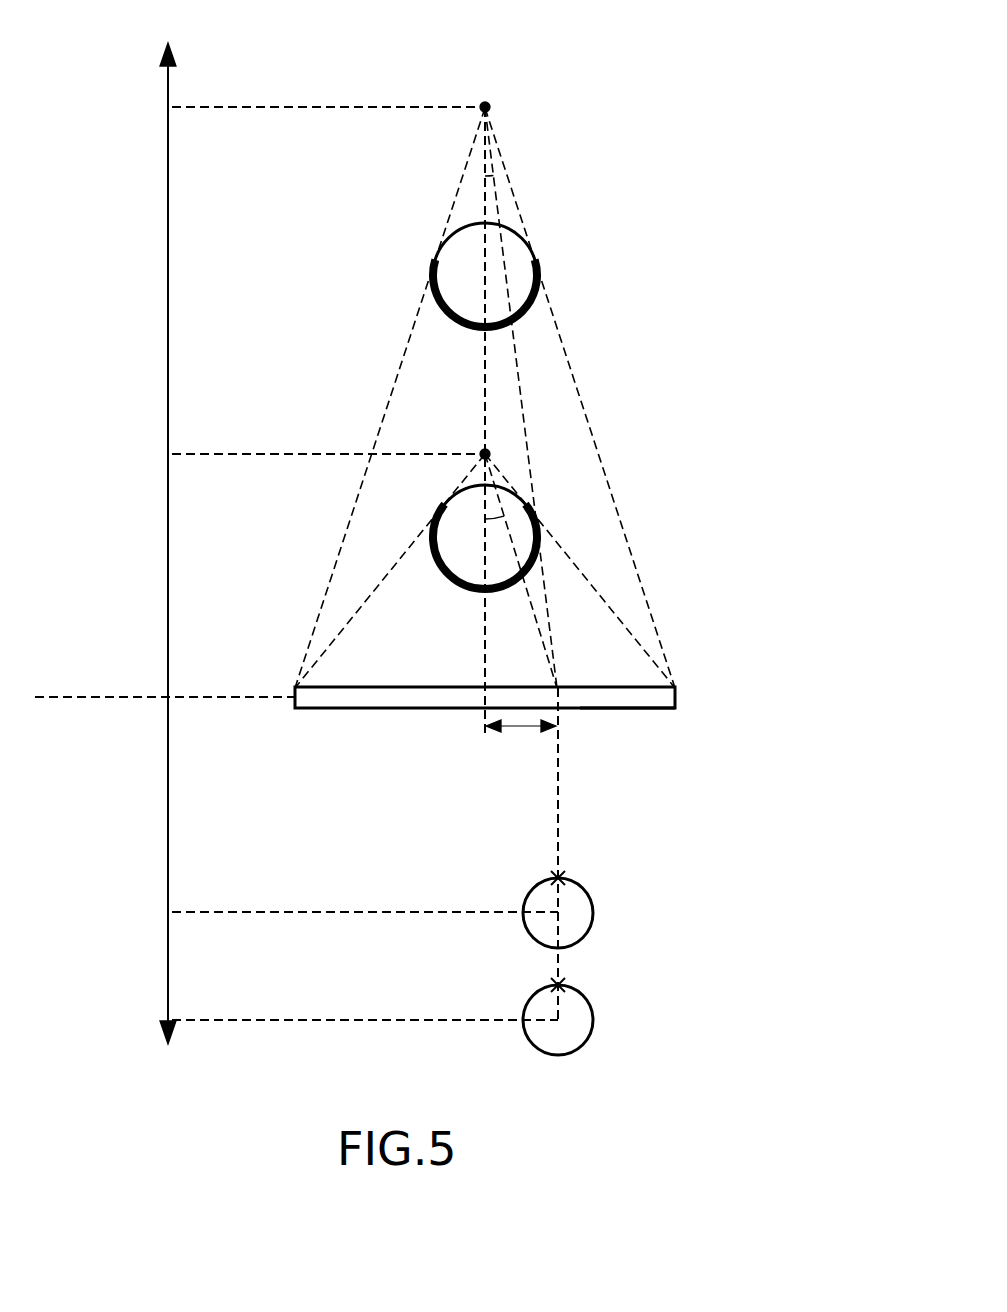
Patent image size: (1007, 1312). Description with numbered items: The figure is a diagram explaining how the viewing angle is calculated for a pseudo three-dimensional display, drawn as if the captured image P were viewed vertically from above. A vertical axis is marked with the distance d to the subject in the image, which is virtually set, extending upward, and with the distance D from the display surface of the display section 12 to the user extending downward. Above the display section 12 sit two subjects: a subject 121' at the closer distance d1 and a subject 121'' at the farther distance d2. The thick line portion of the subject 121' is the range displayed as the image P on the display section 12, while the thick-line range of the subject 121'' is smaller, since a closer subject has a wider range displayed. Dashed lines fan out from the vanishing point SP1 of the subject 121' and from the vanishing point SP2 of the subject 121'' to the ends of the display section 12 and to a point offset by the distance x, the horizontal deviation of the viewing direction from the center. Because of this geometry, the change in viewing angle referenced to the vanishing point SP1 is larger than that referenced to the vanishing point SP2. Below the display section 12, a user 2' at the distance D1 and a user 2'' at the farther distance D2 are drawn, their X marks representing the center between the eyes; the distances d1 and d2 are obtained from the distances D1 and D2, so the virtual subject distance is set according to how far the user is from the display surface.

The display section 12 is at (678, 693).
The image P is at (633, 708).
The user 2' is at (593, 909).
The user 2'' is at (596, 1016).
The subject 121' is at (411, 529).
The subject 121'' is at (537, 269).
The vanishing point SP1 is at (490, 453).
The vanishing point SP2 is at (489, 105).
The distance x is at (521, 741).
The distance to the subject d is at (166, 529).
The distance from the display surface to the user D is at (168, 1063).
The distance d1 is at (306, 455).
The distance d2 is at (306, 108).
The distance D1 is at (342, 912).
The distance D2 is at (342, 1020).